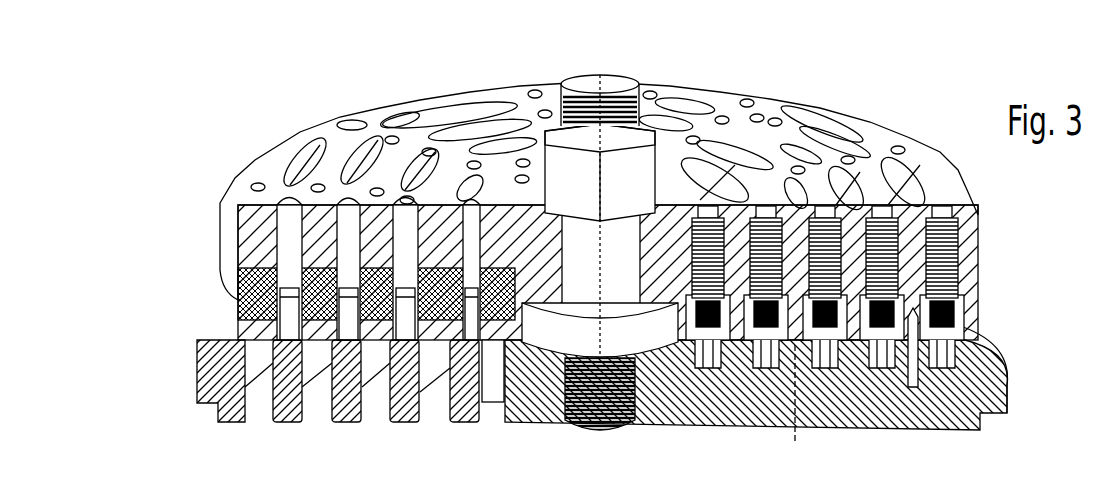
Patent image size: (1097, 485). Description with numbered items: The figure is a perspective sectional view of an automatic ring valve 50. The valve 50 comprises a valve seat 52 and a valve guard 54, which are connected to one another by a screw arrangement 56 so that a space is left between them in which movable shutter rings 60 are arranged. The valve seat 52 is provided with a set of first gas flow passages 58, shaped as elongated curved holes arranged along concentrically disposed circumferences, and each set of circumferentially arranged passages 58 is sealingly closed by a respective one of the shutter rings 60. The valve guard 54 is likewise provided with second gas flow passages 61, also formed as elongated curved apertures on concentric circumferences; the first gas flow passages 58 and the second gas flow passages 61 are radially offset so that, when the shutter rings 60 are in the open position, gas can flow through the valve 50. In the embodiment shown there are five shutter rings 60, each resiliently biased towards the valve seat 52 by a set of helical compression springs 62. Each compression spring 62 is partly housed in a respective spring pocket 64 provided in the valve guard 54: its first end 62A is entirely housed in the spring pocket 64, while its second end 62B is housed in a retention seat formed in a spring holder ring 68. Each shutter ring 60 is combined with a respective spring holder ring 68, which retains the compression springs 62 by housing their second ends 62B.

The automatic ring valve 50 is at (866, 114).
The valve seat 52 is at (728, 422).
The valve guard 54 is at (579, 211).
The screw arrangement 56 is at (626, 90).
The first gas flow passages 58 is at (322, 408).
The shutter rings 60 is at (238, 300).
The second gas flow passages 61 is at (363, 170).
The helical compression springs 62 is at (858, 332).
The first end 62A is at (955, 210).
The second end 62B is at (940, 300).
The spring pocket 64 is at (958, 252).
The spring holder ring 68 is at (953, 315).